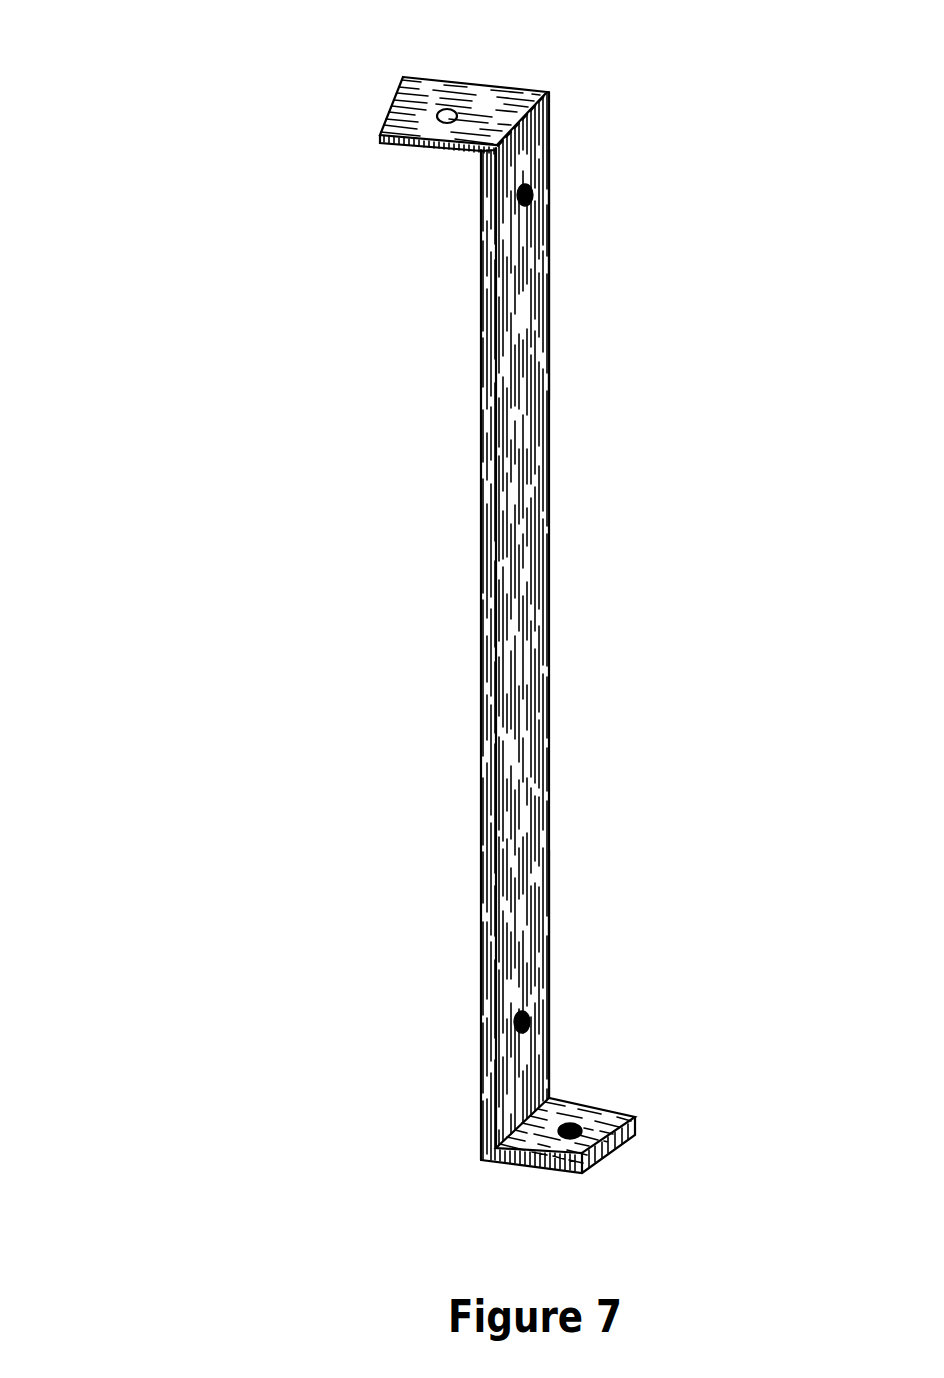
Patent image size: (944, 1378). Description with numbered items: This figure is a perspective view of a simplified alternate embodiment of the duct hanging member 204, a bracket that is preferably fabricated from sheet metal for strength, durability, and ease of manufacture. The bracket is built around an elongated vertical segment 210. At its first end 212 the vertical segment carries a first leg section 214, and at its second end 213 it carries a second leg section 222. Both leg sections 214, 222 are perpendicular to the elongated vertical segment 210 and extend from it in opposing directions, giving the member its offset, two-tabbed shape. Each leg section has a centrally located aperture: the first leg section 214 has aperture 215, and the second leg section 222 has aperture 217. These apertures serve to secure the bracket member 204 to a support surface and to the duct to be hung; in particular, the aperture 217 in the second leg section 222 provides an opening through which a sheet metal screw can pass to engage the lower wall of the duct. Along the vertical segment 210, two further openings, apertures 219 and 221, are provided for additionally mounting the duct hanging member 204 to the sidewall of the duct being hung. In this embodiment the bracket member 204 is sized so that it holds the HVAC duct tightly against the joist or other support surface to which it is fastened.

The duct hanging member 204 is at (433, 613).
The elongated vertical segment 210 is at (523, 665).
The first end 212 is at (523, 272).
The second end 213 is at (523, 1072).
The first leg section 214 is at (480, 108).
The aperture 215 is at (447, 125).
The aperture 217 is at (600, 1113).
The aperture 219 is at (527, 190).
The aperture 221 is at (525, 1018).
The second leg section 222 is at (533, 1135).